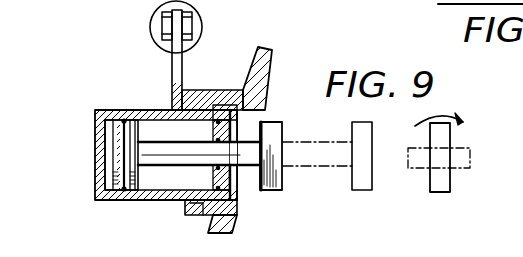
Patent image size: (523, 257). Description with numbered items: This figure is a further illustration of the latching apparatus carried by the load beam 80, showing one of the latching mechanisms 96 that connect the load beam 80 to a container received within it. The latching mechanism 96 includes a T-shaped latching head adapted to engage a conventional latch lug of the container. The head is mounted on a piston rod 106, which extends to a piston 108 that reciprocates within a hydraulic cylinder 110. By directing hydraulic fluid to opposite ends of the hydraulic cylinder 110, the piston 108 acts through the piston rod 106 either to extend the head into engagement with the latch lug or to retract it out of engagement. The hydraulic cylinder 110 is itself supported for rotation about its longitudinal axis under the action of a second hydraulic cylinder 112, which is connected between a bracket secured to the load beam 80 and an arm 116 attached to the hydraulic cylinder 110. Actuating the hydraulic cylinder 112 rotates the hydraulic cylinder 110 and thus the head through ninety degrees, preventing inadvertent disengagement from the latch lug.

The load beam 80 is at (253, 137).
The latching mechanism 96 is at (139, 22).
The piston rod 106 is at (243, 165).
The piston 108 is at (105, 167).
The hydraulic cylinder 110 is at (97, 122).
The hydraulic cylinder 112 is at (202, 27).
The arm 116 is at (172, 67).